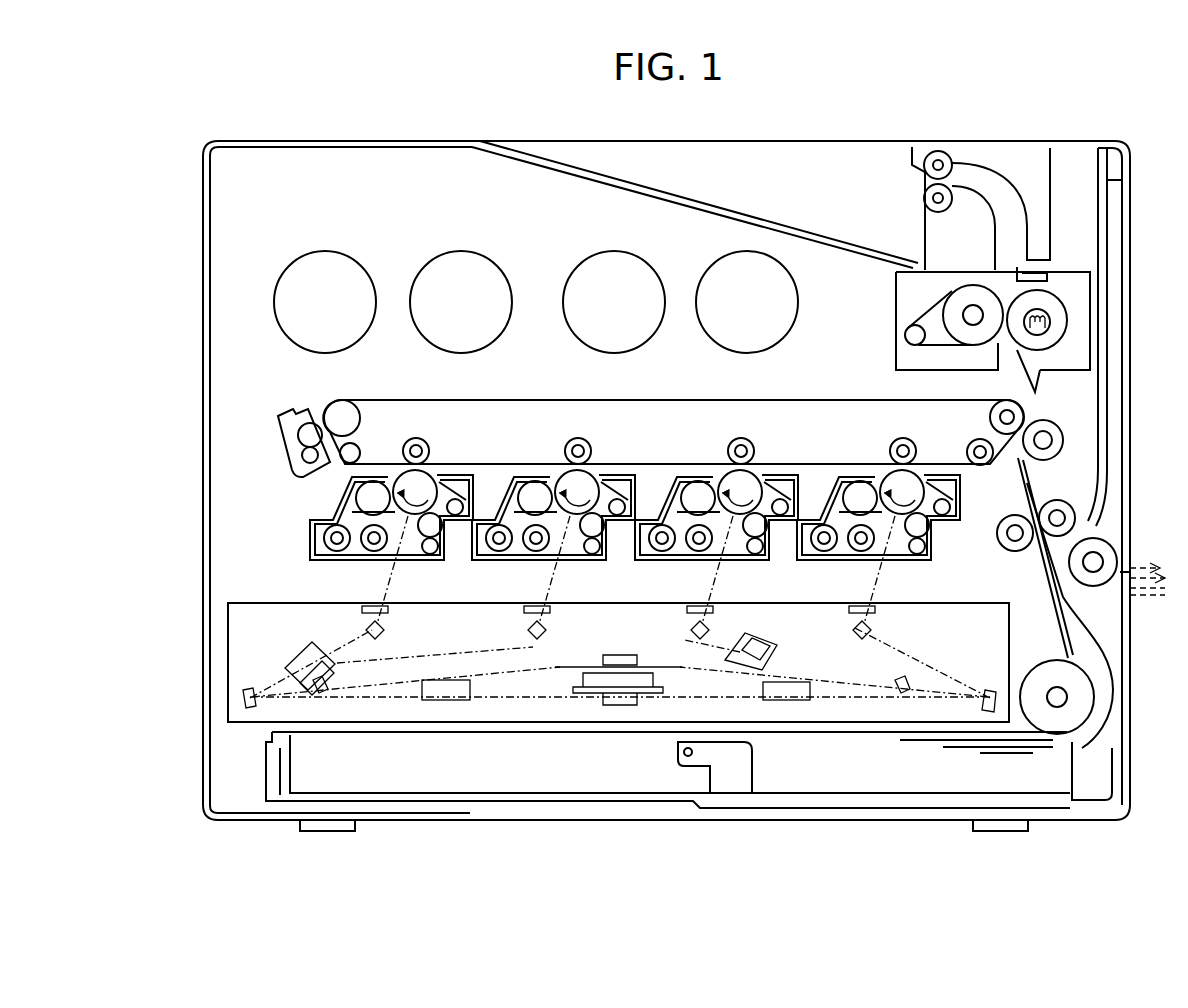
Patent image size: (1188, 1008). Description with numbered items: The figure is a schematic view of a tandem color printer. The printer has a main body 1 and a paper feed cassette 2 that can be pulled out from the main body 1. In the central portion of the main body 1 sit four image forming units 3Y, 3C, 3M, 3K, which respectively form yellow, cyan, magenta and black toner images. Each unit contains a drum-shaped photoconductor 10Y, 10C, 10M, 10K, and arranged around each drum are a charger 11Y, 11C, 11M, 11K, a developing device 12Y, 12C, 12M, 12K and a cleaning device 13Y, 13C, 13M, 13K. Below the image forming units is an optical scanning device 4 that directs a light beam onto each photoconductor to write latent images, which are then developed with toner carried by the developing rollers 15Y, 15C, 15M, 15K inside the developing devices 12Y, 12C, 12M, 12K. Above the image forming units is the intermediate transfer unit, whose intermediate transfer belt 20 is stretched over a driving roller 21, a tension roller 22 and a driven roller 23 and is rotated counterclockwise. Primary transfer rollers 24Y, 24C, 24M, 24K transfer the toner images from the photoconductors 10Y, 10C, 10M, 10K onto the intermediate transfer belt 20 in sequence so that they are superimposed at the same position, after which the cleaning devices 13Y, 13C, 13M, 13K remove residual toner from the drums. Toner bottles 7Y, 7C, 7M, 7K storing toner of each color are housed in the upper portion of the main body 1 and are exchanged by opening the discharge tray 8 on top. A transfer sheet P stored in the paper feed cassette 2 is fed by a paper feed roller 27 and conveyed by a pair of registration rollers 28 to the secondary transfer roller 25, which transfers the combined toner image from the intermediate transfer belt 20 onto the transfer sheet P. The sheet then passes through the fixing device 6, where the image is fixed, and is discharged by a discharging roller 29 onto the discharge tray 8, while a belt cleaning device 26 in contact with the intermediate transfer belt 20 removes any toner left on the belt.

The main body 1 is at (203, 604).
The paper feed cassette 2 is at (668, 799).
The image forming unit 3Y is at (383, 523).
The image forming unit 3C is at (569, 523).
The image forming unit 3M is at (735, 523).
The image forming unit 3K is at (896, 523).
The optical scanning device 4 is at (252, 603).
The fixing device 6 is at (1075, 256).
The toner bottle 7Y is at (360, 267).
The toner bottle 7C is at (496, 267).
The toner bottle 7M is at (649, 268).
The toner bottle 7K is at (792, 280).
The discharge tray 8 is at (754, 223).
The photoconductor 10Y is at (425, 472).
The photoconductor 10C is at (594, 472).
The photoconductor 10M is at (759, 472).
The photoconductor 10K is at (919, 472).
The charger 11Y is at (413, 567).
The charger 11C is at (563, 577).
The charger 11M is at (743, 577).
The charger 11K is at (898, 577).
The developing device 12Y is at (356, 568).
The developing device 12C is at (553, 538).
The developing device 12M is at (716, 536).
The developing device 12K is at (878, 536).
The cleaning device 13Y is at (478, 486).
The cleaning device 13C is at (634, 461).
The cleaning device 13M is at (799, 461).
The cleaning device 13K is at (960, 528).
The developing roller 15Y is at (358, 497).
The developing roller 15C is at (525, 472).
The developing roller 15M is at (687, 472).
The developing roller 15K is at (849, 472).
The intermediate transfer belt 20 is at (655, 423).
The driving roller 21 is at (993, 402).
The tension roller 22 is at (352, 464).
The driven roller 23 is at (333, 405).
The primary transfer roller 24Y is at (430, 428).
The primary transfer roller 24C is at (587, 436).
The primary transfer roller 24M is at (750, 436).
The primary transfer roller 24K is at (911, 436).
The secondary transfer roller 25 is at (1065, 440).
The belt cleaning device 26 is at (273, 426).
The paper feed roller 27 is at (1056, 660).
The registration rollers 28 is at (1073, 500).
The discharging roller 29 is at (959, 160).
The transfer sheet P is at (1011, 753).